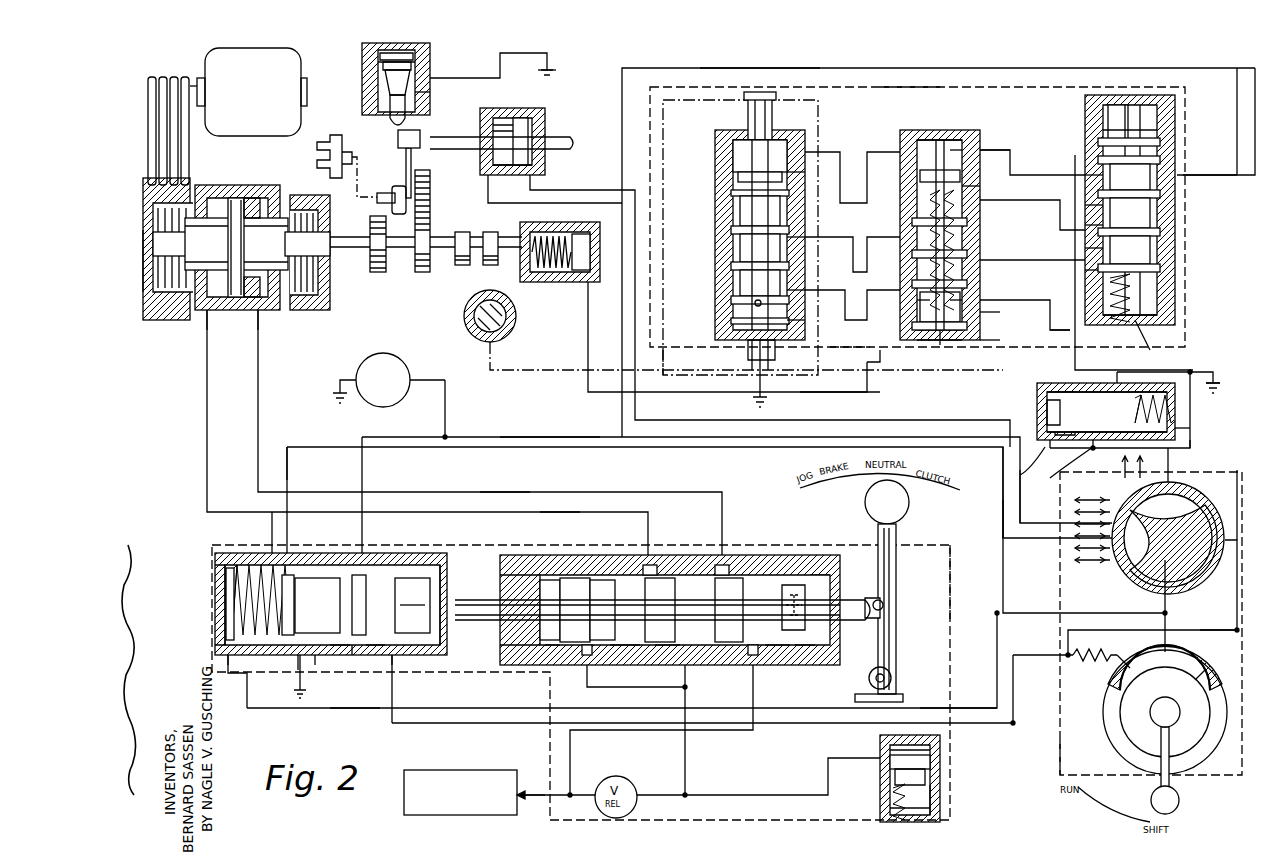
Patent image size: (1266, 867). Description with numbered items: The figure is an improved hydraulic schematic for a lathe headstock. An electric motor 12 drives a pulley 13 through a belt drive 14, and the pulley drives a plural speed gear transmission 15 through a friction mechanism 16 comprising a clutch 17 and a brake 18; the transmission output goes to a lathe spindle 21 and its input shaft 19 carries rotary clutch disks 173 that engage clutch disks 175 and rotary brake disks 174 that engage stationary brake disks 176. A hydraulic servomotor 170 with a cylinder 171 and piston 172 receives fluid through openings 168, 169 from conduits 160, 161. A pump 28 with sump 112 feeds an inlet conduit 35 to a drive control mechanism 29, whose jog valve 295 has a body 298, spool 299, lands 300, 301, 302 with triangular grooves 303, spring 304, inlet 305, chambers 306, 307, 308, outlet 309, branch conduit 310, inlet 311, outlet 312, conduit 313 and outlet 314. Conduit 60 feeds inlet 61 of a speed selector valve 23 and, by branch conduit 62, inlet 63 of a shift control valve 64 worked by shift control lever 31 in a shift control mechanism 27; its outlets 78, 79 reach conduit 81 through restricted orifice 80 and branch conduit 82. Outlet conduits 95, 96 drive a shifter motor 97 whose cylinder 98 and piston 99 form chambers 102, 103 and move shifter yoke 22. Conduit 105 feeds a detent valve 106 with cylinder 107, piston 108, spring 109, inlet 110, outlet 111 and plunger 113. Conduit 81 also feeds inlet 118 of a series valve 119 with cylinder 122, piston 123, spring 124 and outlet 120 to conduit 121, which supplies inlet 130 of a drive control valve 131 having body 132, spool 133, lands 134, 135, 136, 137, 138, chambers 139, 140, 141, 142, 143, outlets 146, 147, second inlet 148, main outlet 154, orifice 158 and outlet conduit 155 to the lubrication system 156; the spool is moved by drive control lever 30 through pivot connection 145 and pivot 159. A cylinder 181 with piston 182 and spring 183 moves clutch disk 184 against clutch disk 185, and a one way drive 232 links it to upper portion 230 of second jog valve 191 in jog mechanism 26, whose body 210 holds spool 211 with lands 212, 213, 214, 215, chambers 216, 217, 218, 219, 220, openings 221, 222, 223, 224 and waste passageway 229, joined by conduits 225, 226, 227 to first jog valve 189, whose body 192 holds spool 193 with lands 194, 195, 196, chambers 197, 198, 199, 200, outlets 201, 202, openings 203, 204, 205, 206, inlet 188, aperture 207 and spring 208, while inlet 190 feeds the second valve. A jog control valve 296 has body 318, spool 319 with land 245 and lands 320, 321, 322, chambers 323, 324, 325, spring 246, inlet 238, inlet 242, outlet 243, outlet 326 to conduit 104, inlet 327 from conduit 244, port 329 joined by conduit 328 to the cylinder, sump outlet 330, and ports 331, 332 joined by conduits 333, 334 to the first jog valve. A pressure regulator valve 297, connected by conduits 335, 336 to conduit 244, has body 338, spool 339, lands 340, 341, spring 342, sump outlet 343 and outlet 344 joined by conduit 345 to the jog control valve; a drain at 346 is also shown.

The electric motor 12 is at (207, 58).
The belt drive 14 is at (148, 132).
The pulley 13 is at (145, 303).
The clutch 17 is at (146, 278).
The clutch disks 175 is at (153, 208).
The rotary clutch disks 173 is at (153, 248).
The hydraulic servomotor 170 is at (205, 185).
The friction mechanism 16 is at (232, 312).
The piston 172 is at (237, 198).
The cylinder 171 is at (252, 198).
The fluid opening 168 is at (207, 312).
The fluid opening 169 is at (260, 312).
The brake 18 is at (328, 295).
The brake disks 176 is at (322, 212).
The rotary brake disks 174 is at (322, 240).
The input shaft 19 is at (340, 250).
The plural speed gear transmission 15 is at (418, 262).
The lathe spindle 21 is at (316, 157).
The shifter yoke 22 is at (406, 160).
The detent valve 106 is at (425, 58).
The outlet 111 is at (425, 72).
The inlet 110 is at (425, 100).
The spring 109 is at (362, 56).
The piston 108 is at (366, 69).
The cylinder 107 is at (374, 78).
The plunger 113 is at (392, 124).
The sump 112 is at (548, 55).
The shifter motor 97 is at (546, 126).
The second chamber 103 is at (523, 118).
The piston 99 is at (548, 152).
The first chamber 102 is at (492, 156).
The cylinder 98 is at (500, 176).
The clutch disk 185 is at (462, 232).
The clutch disk 184 is at (490, 232).
The spring 183 is at (566, 230).
The cylinder 181 is at (538, 284).
The piston 182 is at (576, 284).
The one way drive 232 is at (464, 320).
The pump 28 is at (383, 353).
The inlet conduit 35 is at (545, 437).
The conduit 313 is at (288, 462).
The outlet 312 is at (275, 545).
The conduit 160 is at (503, 492).
The conduit 161 is at (550, 492).
The conduit 105 is at (760, 68).
The jog mechanism 26 is at (905, 87).
The valve body 210 is at (730, 130).
The upper portion 230 is at (772, 100).
The fluid opening 224 is at (805, 142).
The fifth chamber 220 is at (733, 152).
The fourth land 215 is at (735, 182).
The fourth chamber 219 is at (733, 196).
The third land 214 is at (733, 214).
The third chamber 218 is at (733, 250).
The valve spool 211 is at (733, 272).
The second land 213 is at (733, 290).
The first land 212 is at (733, 308).
The first chamber 216 is at (733, 326).
The fluid opening 223 is at (790, 196).
The inlet 190 is at (790, 226).
The conduit 227 is at (805, 240).
The fluid opening 222 is at (790, 280).
The second chamber 217 is at (790, 300).
The conduit 226 is at (810, 320).
The conduit 225 is at (845, 345).
The fluid opening 221 is at (782, 342).
The second jog valve 191 is at (720, 375).
The waste passageway 229 is at (755, 372).
The valve body 192 is at (965, 130).
The fluid opening 206 is at (905, 140).
The third land 196 is at (917, 198).
The fluid opening 205 is at (917, 226).
The second land 195 is at (917, 256).
The fluid opening 204 is at (917, 282).
The first land 194 is at (917, 308).
The fluid opening 203 is at (917, 328).
The inlet 188 is at (980, 250).
The third chamber 199 is at (980, 236).
The second chamber 198 is at (980, 280).
The first outlet 201 is at (980, 296).
The central aperture 207 is at (980, 312).
The second outlet 202 is at (980, 186).
The fourth chamber 200 is at (980, 160).
The conduit 333 is at (1010, 150).
The first chamber 197 is at (965, 330).
The spool 193 is at (955, 340).
The first jog valve 189 is at (972, 345).
The spring 208 is at (995, 350).
The conduit 328 is at (880, 392).
The land 320 is at (1085, 178).
The port 329 is at (1085, 205).
The chamber 324 is at (1085, 225).
The port 331 is at (1085, 248).
The port 332 is at (1085, 270).
The conduit 334 is at (1042, 325).
The inlet 238 is at (1175, 125).
The land 245 is at (1125, 105).
The valve spool 319 is at (1137, 105).
The outlet 243 is at (1090, 135).
The inlet 242 is at (1100, 140).
The conduit 104 is at (1240, 175).
The chamber 323 is at (1175, 165).
The outlet 326 is at (1175, 190).
The inlet 327 is at (1160, 210).
The outlet 330 is at (1160, 228).
The land 321 is at (1160, 244).
The chamber 325 is at (1160, 262).
The land 322 is at (1160, 278).
The spring 246 is at (1160, 298).
The jog control valve 296 is at (1175, 315).
The drain 346 is at (1170, 325).
The conduit 345 is at (1093, 383).
The second land 341 is at (1110, 383).
The first land 340 is at (1105, 383).
The sump outlet 343 is at (1120, 395).
The valve body 318 is at (1140, 383).
The pressure regulator valve 297 is at (1037, 410).
The outlet 344 is at (1065, 383).
The valve spool 339 is at (1047, 405).
The spring 342 is at (1168, 410).
The valve body 338 is at (1190, 428).
The conduit 244 is at (1232, 445).
The conduit 336 is at (1060, 470).
The conduit 335 is at (1025, 468).
The outlet conduit 95 is at (1020, 480).
The outlet conduit 96 is at (1003, 508).
The speed selector valve 23 is at (1207, 576).
The conduit 81 is at (1237, 490).
The inlet 61 is at (1165, 585).
The branch conduit 62 is at (1167, 613).
The branch conduit 82 is at (1237, 630).
The shift control valve 64 is at (1190, 735).
The inlet 63 is at (1153, 665).
The first outlet 78 is at (1118, 680).
The second outlet 79 is at (1205, 672).
The restricted orifice 80 is at (1068, 655).
The shift control lever 31 is at (1178, 792).
The shift control mechanism 27 is at (1060, 757).
The drive control lever 30 is at (875, 533).
The chamber 143 is at (818, 555).
The pivot connection 145 is at (890, 600).
The pivot 159 is at (896, 672).
The drive control mechanism 29 is at (950, 582).
The conduit 60 is at (965, 708).
The drive control valve 131 is at (745, 560).
The valve body 132 is at (812, 665).
The land 137 is at (548, 575).
The valve spool 133 is at (572, 580).
The land 134 is at (605, 575).
The first outlet 146 is at (650, 555).
The second outlet 147 is at (722, 555).
The land 135 is at (665, 580).
The land 136 is at (730, 575).
The restricted orifice 158 is at (795, 575).
The inlet 130 is at (690, 665).
The chamber 139 is at (545, 668).
The second inlet 148 is at (585, 668).
The chamber 140 is at (620, 665).
The chamber 141 is at (655, 665).
The chamber 142 is at (740, 668).
The main outlet 154 is at (778, 668).
The land 138 is at (798, 668).
The jog valve 295 is at (232, 553).
The valve body 298 is at (218, 553).
The spring 304 is at (270, 565).
The land 300 is at (300, 565).
The valve spool 299 is at (335, 575).
The inlet 305 is at (372, 565).
The triangular grooves 303 is at (408, 580).
The land 302 is at (447, 565).
The inlet 311 is at (232, 660).
The first chamber 306 is at (298, 665).
The outlet 314 is at (315, 665).
The second chamber 307 is at (335, 660).
The land 301 is at (350, 660).
The third chamber 308 is at (375, 660).
The outlet 309 is at (393, 660).
The branch conduit 310 is at (352, 710).
The lubrication requirements 156 is at (490, 770).
The outlet conduit 155 is at (538, 795).
The conduit 121 is at (865, 758).
The inlet 118 is at (930, 752).
The outlet 120 is at (890, 765).
The cylinder 122 is at (930, 775).
The piston 123 is at (890, 785).
The series valve 119 is at (930, 790).
The spring 124 is at (930, 808).